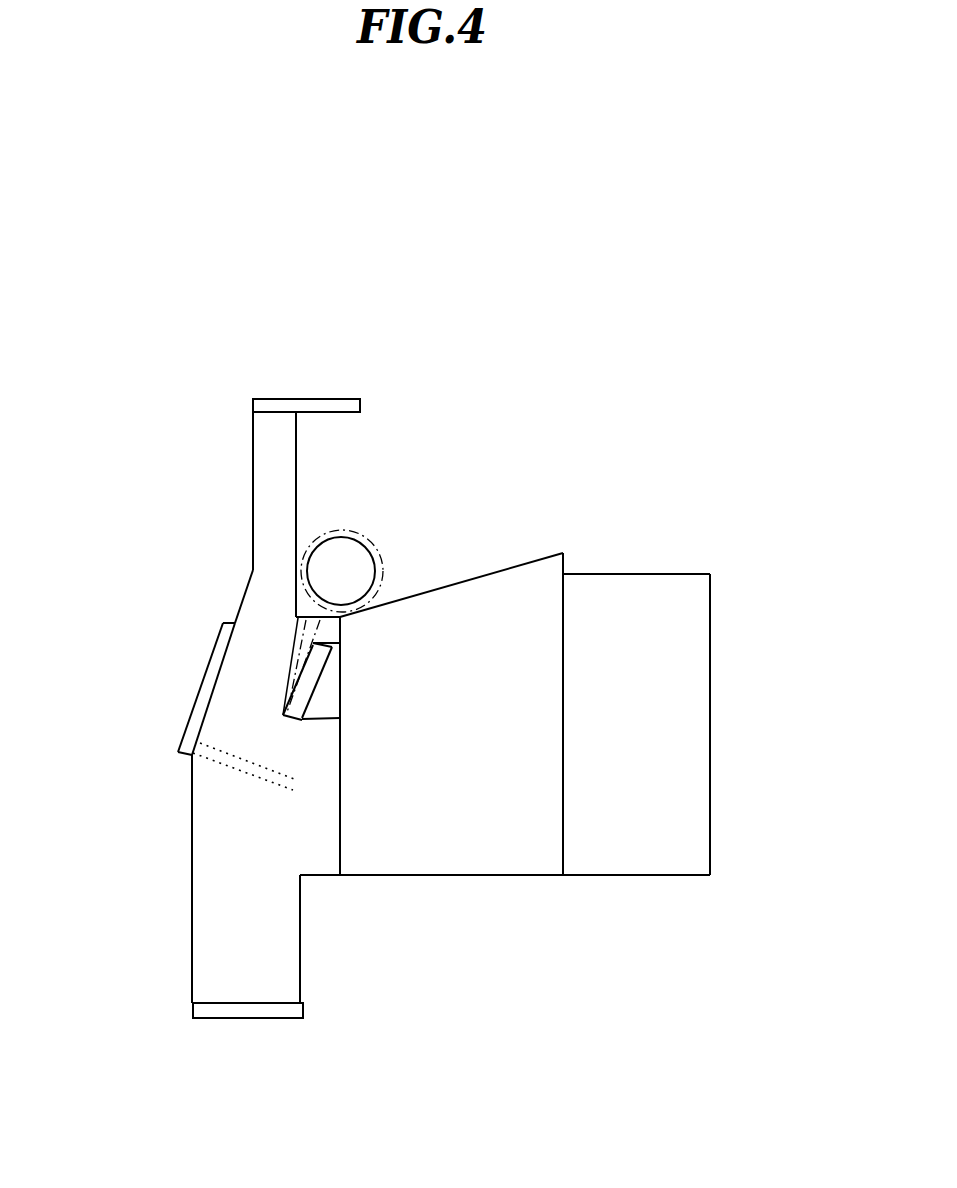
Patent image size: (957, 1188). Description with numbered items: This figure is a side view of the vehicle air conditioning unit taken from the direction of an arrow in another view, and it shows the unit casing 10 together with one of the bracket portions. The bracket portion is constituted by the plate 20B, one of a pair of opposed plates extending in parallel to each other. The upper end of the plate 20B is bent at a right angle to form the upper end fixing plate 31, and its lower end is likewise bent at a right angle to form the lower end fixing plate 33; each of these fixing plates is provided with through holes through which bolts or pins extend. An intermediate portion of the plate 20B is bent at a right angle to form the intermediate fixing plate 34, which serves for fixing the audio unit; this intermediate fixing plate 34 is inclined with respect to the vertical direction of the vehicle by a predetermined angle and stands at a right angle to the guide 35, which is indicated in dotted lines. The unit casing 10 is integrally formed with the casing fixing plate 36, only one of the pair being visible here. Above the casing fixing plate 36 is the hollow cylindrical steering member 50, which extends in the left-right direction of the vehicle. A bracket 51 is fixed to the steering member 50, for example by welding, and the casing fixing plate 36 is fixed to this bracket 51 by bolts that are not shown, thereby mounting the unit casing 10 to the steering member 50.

The unit casing 10 is at (560, 548).
The plate 20B is at (253, 473).
The upper end fixing plate 31 is at (335, 397).
The lower end fixing plate 33 is at (241, 1025).
The intermediate fixing plate 34 is at (207, 665).
The guide 35 is at (247, 777).
The casing fixing plate 36 is at (313, 668).
The steering member 50 is at (352, 527).
The bracket 51 is at (357, 645).